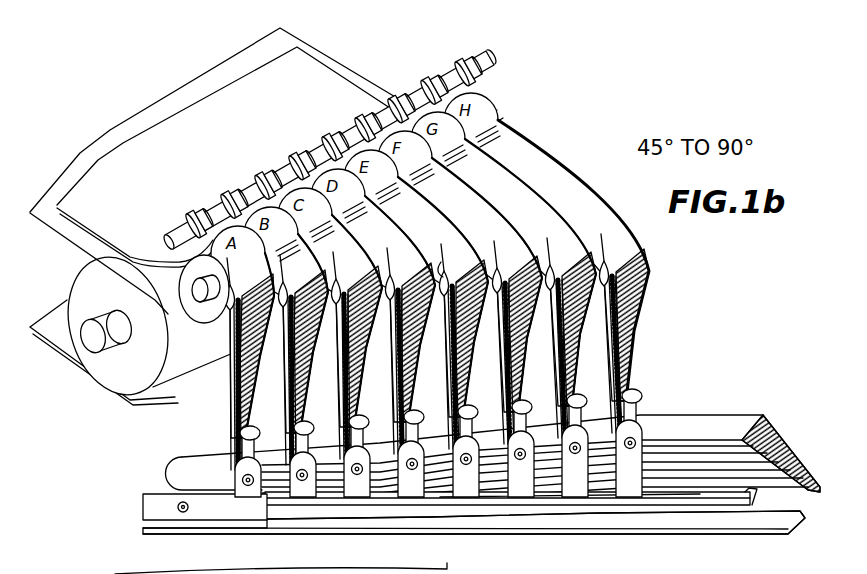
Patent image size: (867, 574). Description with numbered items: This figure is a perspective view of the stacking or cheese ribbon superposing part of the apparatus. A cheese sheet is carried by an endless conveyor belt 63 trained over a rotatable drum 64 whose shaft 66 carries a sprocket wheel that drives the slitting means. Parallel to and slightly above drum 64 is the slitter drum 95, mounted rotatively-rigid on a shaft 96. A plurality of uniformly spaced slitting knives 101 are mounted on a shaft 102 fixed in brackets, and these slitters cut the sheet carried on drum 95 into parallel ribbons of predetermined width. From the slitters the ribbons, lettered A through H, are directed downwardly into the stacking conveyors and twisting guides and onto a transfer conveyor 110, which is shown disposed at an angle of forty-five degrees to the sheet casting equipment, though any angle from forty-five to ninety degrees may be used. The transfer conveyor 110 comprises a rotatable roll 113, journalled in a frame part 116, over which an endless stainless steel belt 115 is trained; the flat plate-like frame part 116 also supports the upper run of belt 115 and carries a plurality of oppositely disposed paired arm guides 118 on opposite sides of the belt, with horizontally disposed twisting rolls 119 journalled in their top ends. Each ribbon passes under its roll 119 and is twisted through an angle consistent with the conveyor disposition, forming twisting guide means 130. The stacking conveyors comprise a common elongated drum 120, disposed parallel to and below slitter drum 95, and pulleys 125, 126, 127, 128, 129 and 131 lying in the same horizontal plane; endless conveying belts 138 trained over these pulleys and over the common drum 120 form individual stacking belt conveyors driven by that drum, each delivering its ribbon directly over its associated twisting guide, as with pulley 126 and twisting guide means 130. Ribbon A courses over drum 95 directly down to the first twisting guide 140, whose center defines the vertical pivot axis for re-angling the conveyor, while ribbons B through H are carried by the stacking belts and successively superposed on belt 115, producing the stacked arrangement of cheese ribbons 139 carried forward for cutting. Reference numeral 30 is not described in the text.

The housing 30 is at (105, 173).
The endless conveyor belt 63 is at (77, 242).
The rotatable drum 64 is at (85, 290).
The shaft 66 is at (86, 337).
The drum 95 is at (181, 275).
The shaft 96 is at (193, 292).
The slitting knives 101 is at (229, 196).
The shaft 102 is at (180, 233).
The transfer conveyor 110 is at (197, 459).
The rotatable roll 113 is at (173, 528).
The endless stainless steel belt 115 is at (222, 529).
The frame part 116 is at (340, 497).
The paired arm guides 118 is at (413, 490).
The twisting rolls 119 is at (414, 433).
The elongated drum 120 is at (280, 310).
The pulley 125 is at (334, 306).
The pulley 126 is at (388, 302).
The pulley 127 is at (442, 298).
The pulley 128 is at (495, 296).
The pulley 129 is at (548, 292).
The pulley 131 is at (602, 289).
The twisting guide means 130 is at (442, 499).
The endless conveying belt 138 is at (441, 272).
The stacked arrangement of cheese ribbons 139 is at (730, 427).
The first twisting guide 140 is at (250, 437).